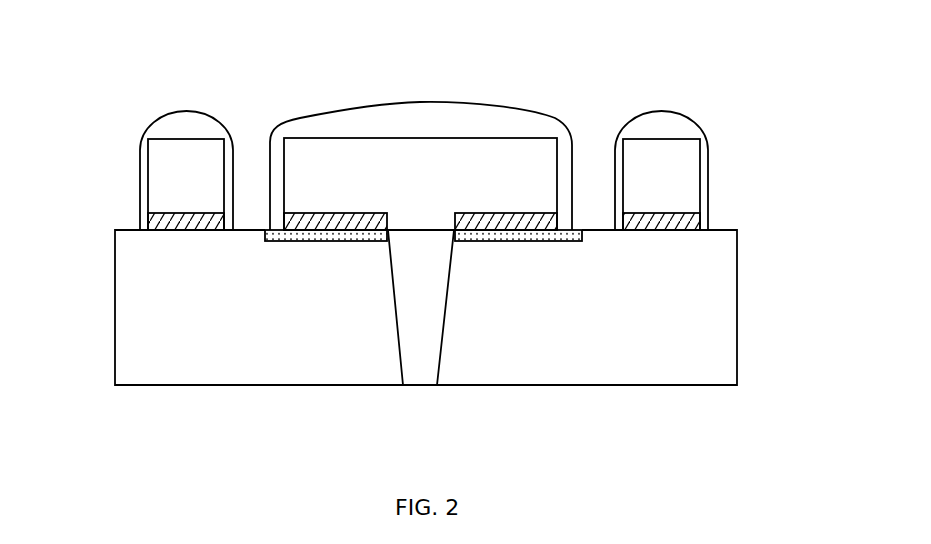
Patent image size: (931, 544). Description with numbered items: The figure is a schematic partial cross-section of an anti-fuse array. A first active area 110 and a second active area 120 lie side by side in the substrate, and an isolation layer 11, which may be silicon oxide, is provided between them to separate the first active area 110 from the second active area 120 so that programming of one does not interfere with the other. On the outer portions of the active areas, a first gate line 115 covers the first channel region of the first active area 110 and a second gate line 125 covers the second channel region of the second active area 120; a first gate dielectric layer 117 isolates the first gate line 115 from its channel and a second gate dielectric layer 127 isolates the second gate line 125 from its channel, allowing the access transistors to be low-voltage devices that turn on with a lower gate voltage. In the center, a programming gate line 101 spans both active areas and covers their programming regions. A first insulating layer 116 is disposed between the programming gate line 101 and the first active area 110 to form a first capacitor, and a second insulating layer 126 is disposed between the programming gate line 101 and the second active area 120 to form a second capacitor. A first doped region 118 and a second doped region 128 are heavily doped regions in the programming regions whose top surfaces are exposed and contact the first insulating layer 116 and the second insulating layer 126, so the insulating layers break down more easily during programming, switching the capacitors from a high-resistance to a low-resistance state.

The isolation layer 11 is at (415, 328).
The programming gate line 101 is at (321, 168).
The first active area 110 is at (215, 292).
The first gate line 115 is at (187, 162).
The first insulating layer 116 is at (345, 223).
The first gate dielectric layer 117 is at (160, 221).
The first doped region 118 is at (308, 239).
The second active area 120 is at (592, 282).
The second gate line 125 is at (659, 155).
The second insulating layer 126 is at (487, 223).
The second gate dielectric layer 127 is at (665, 222).
The second doped region 128 is at (525, 240).